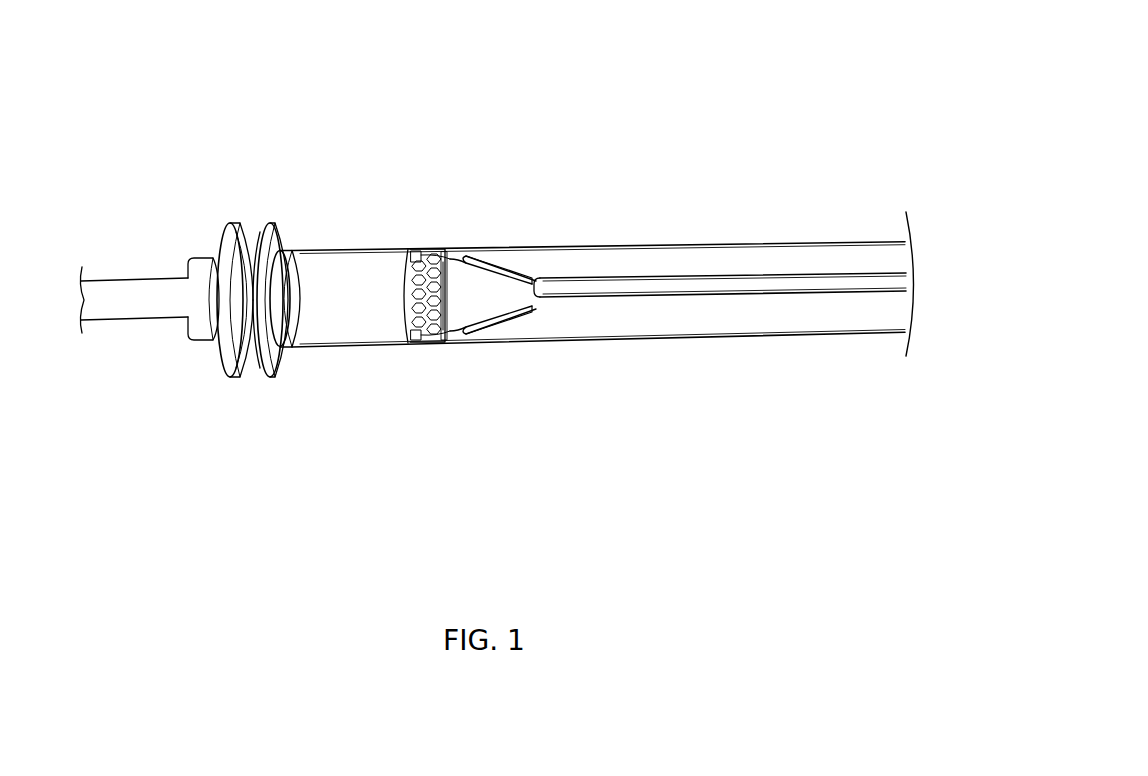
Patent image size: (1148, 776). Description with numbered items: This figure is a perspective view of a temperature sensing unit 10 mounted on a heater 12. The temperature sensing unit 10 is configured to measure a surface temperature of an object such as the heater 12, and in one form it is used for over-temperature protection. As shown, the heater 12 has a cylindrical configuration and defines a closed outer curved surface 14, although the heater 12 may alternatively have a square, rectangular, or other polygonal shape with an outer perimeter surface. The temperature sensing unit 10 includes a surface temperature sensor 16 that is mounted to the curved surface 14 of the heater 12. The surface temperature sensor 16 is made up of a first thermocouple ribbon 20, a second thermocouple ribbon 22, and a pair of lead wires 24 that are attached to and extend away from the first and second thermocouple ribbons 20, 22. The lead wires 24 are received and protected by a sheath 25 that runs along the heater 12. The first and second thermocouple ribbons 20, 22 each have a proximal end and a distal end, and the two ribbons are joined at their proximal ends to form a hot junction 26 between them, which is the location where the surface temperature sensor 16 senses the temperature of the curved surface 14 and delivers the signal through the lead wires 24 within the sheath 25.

The temperature sensing unit 10 is at (708, 118).
The heater 12 is at (339, 352).
The curved surface 14 is at (325, 263).
The surface temperature sensor 16 is at (433, 201).
The first thermocouple ribbon 20 is at (420, 320).
The second thermocouple ribbon 22 is at (417, 252).
The lead wires 24 is at (517, 270).
The sheath 25 is at (715, 286).
The hot junction 26 is at (437, 300).